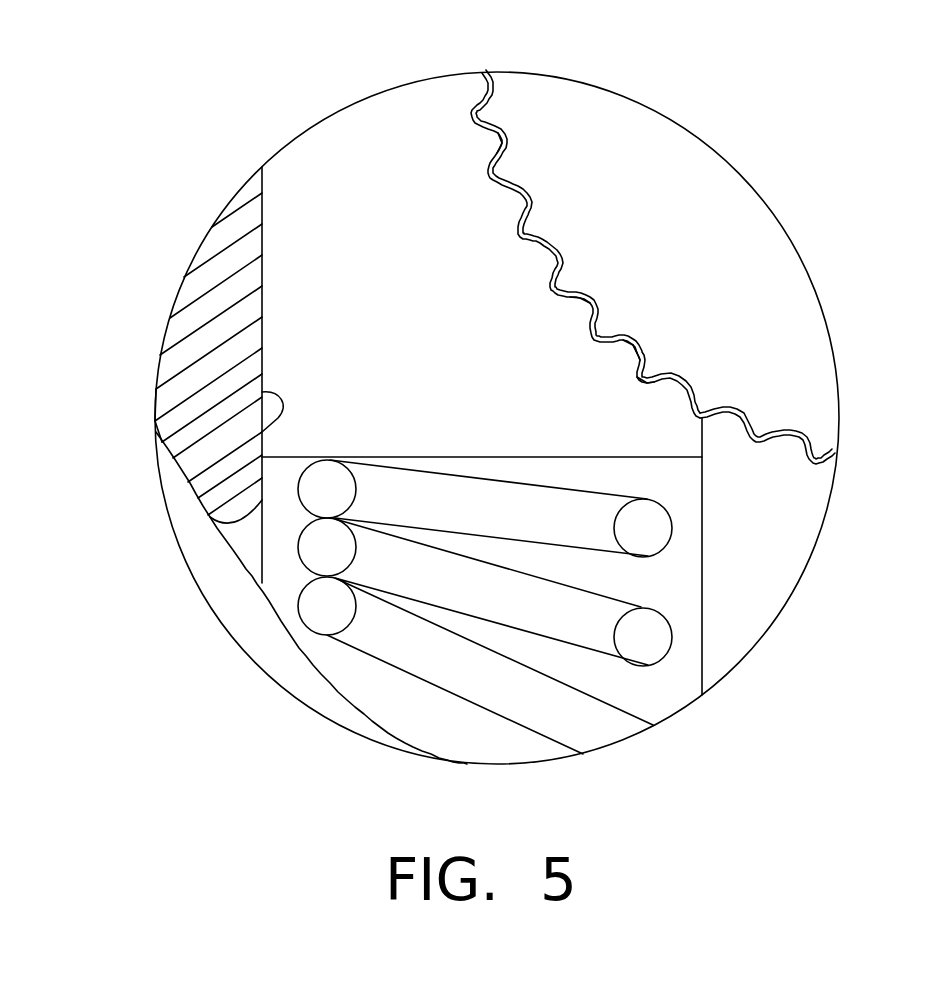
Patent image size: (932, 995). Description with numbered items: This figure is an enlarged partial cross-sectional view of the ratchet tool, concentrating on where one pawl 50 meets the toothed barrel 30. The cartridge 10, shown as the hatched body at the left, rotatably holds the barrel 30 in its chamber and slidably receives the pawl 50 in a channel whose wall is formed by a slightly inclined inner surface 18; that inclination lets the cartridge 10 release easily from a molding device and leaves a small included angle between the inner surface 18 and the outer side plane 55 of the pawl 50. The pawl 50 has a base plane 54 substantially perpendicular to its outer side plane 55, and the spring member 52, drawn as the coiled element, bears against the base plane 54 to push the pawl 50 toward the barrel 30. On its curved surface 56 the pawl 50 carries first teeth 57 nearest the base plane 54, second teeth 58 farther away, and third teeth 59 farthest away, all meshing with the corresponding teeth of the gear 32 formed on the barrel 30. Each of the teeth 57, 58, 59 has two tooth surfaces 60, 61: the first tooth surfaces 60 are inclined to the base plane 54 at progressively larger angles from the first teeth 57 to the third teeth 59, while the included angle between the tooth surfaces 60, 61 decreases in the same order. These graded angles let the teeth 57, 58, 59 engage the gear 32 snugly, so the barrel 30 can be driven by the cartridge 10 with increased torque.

The cartridge 10 is at (172, 372).
The inclined inner surface 18 is at (193, 483).
The barrel 30 is at (656, 127).
The gear 32 is at (760, 435).
The pawl 50 is at (297, 228).
The spring member 52 is at (440, 665).
The base plane 54 is at (660, 458).
The outer side plane 55 is at (262, 318).
The curved surface 56 is at (533, 235).
The first teeth 57 is at (635, 358).
The second teeth 58 is at (570, 303).
The third teeth 59 is at (503, 140).
The first tooth surface 60 is at (647, 343).
The second tooth surface 61 is at (647, 365).